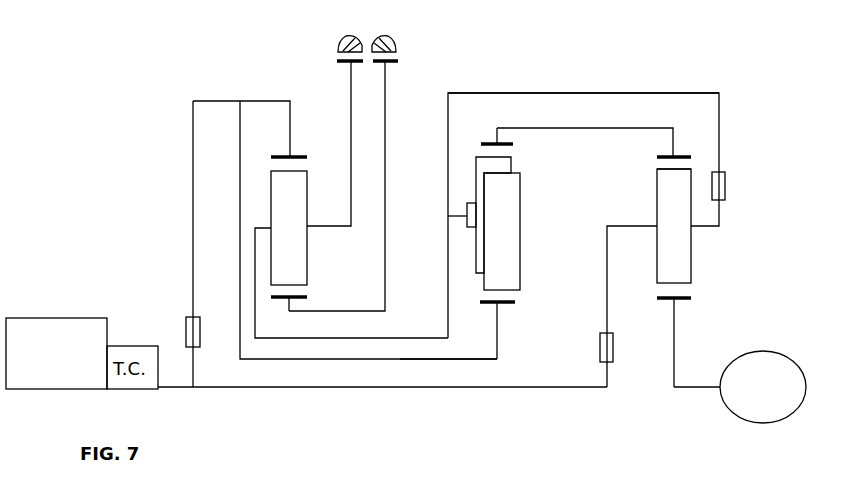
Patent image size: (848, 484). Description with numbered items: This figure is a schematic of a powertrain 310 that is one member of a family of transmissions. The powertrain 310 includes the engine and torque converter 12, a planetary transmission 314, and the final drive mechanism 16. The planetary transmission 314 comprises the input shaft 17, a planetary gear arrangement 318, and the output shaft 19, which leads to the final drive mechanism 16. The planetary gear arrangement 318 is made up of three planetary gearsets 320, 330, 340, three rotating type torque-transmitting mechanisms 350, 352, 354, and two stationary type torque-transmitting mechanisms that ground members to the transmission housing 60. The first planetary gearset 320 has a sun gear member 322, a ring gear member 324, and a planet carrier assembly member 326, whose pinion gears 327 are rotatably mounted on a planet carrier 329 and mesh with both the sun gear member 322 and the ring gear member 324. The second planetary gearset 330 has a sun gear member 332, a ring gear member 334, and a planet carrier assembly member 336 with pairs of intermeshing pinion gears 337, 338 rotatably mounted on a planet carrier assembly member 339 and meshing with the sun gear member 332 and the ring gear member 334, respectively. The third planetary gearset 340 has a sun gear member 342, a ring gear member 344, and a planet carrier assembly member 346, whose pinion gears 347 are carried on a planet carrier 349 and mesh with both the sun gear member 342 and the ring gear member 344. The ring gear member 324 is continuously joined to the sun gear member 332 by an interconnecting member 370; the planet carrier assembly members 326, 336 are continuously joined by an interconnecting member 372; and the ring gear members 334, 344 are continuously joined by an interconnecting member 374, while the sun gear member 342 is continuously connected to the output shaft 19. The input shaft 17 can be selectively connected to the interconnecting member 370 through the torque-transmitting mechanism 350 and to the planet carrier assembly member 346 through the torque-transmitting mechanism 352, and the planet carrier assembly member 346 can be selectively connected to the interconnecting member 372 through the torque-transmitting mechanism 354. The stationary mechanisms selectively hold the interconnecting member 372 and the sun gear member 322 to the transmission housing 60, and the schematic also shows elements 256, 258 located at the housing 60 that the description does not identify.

The engine and torque converter 12 is at (59, 317).
The final drive mechanism 16 is at (788, 354).
The input shaft 17 is at (180, 389).
The output shaft 19 is at (700, 389).
The transmission housing 60 is at (385, 36).
The first clutch pad 256 is at (333, 61).
The second clutch pad 258 is at (428, 55).
The powertrain 310 is at (126, 176).
The planetary transmission 314 is at (606, 64).
The planetary gear arrangement 318 is at (460, 352).
The planetary gearset 320 is at (272, 310).
The sun gear member 322 is at (297, 300).
The ring gear member 324 is at (276, 155).
The planet carrier assembly member 326 is at (309, 169).
The pinion gears 327 is at (303, 213).
The planet carrier 329 is at (264, 228).
The planetary gearset 330 is at (482, 362).
The sun gear member 332 is at (508, 305).
The ring gear member 334 is at (504, 142).
The planet carrier assembly member 336 is at (475, 157).
The pinion gears 337 is at (512, 218).
The pinion gears 338 is at (480, 240).
The planet carrier assembly member 339 is at (458, 214).
The planetary gearset 340 is at (651, 292).
The sun gear member 342 is at (685, 300).
The ring gear member 344 is at (680, 155).
The planet carrier assembly member 346 is at (656, 167).
The pinion gears 347 is at (662, 194).
The planet carrier 349 is at (633, 226).
The torque-transmitting mechanism 350 is at (202, 328).
The torque-transmitting mechanism 352 is at (598, 353).
The torque-transmitting mechanism 354 is at (727, 186).
The interconnecting member 370 is at (328, 361).
The interconnecting member 372 is at (446, 320).
The interconnecting member 374 is at (610, 128).